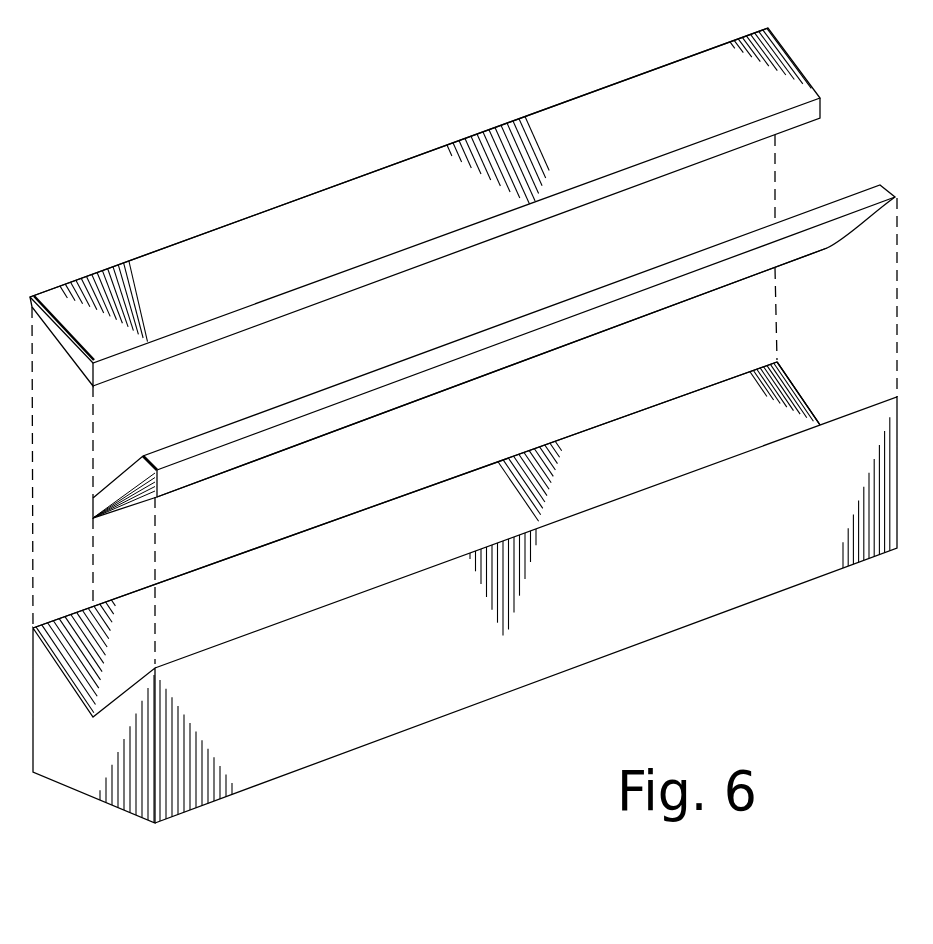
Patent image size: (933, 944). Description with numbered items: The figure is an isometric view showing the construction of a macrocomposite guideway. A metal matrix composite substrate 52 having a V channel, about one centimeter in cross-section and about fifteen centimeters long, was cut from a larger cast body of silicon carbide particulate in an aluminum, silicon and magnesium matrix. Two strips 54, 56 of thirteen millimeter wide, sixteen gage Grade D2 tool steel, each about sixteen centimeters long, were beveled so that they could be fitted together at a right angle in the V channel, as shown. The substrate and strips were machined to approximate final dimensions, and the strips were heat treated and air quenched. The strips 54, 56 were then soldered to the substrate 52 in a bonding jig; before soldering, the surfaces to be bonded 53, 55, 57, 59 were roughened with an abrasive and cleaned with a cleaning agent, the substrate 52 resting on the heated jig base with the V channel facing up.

The metal matrix composite substrate 52 is at (752, 571).
The surface to be bonded 53 is at (386, 621).
The strip 54 is at (853, 200).
The surface to be bonded 55 is at (750, 402).
The strip 56 is at (653, 117).
The surface to be bonded 57 is at (782, 250).
The surface to be bonded 59 is at (200, 264).